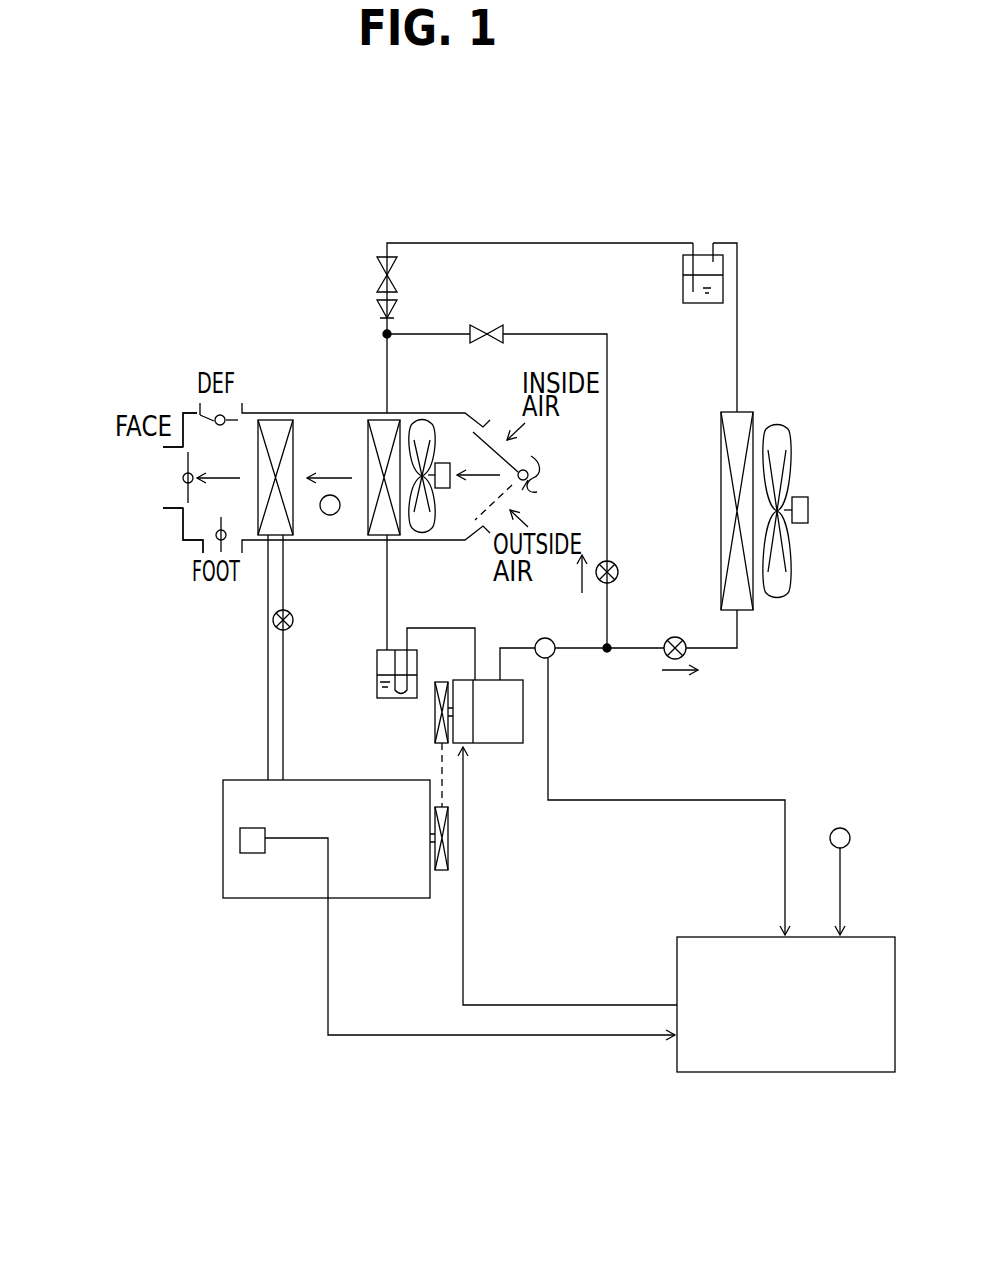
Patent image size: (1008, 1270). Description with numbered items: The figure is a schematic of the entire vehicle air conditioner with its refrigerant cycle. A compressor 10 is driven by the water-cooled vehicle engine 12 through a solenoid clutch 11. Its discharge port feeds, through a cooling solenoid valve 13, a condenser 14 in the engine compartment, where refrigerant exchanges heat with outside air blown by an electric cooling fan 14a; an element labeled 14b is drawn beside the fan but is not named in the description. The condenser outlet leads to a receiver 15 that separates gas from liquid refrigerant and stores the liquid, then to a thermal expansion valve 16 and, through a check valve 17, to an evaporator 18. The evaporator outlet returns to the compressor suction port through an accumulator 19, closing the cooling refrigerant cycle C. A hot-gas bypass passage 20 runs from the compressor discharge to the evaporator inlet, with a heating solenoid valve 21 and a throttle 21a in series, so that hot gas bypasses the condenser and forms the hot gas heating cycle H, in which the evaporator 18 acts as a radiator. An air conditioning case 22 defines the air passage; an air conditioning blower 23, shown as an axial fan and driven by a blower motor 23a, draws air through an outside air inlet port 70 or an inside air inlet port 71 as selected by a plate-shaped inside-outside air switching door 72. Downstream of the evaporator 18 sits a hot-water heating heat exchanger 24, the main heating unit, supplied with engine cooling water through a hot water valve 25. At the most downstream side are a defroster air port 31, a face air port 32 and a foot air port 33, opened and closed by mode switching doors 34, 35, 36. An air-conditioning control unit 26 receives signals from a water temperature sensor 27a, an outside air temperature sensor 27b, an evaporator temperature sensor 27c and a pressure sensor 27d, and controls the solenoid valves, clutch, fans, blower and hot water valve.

The compressor 10 is at (505, 743).
The solenoid clutch 11 is at (435, 718).
The vehicle engine 12 is at (278, 898).
The cooling solenoid valve 13 is at (683, 640).
The condenser 14 is at (721, 458).
The electric cooling fan 14a is at (770, 430).
The condenser fan motor 14b is at (798, 523).
The receiver 15 is at (683, 260).
The thermal expansion valve 16 is at (377, 270).
The check valve 17 is at (377, 308).
The evaporator 18 is at (380, 425).
The accumulator 19 is at (377, 663).
The hot-gas bypass passage 20 is at (550, 332).
The heating solenoid valve 21 is at (618, 565).
The throttle 21a is at (482, 325).
The air conditioning case 22 is at (267, 410).
The air conditioning blower 23 is at (420, 422).
The blower motor 23a is at (442, 463).
The hot-water heating heat exchanger 24 is at (295, 508).
The hot water valve 25 is at (273, 633).
The air-conditioning control unit (ECU) 26 is at (677, 1062).
The water temperature sensor 27a is at (240, 840).
The outside air temperature sensor 27b is at (845, 826).
The evaporator temperature sensor 27c is at (332, 513).
The pressure sensor 27d is at (555, 655).
The defroster air port 31 is at (207, 400).
The face air port 32 is at (177, 477).
The foot air port 33 is at (187, 553).
The mode switching door 34 is at (190, 410).
The mode switching door 35 is at (183, 492).
The mode switching door 36 is at (217, 523).
The outside air inlet port 70 is at (510, 503).
The inside air inlet port 71 is at (518, 443).
The inside-outside air switching door 72 is at (543, 460).
The hot gas heating cycle H is at (608, 494).
The cooling refrigerant cycle C is at (738, 316).